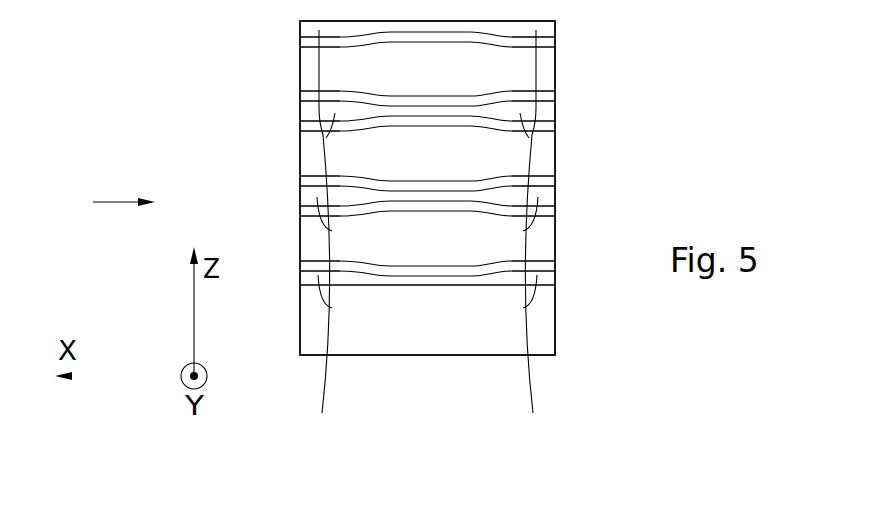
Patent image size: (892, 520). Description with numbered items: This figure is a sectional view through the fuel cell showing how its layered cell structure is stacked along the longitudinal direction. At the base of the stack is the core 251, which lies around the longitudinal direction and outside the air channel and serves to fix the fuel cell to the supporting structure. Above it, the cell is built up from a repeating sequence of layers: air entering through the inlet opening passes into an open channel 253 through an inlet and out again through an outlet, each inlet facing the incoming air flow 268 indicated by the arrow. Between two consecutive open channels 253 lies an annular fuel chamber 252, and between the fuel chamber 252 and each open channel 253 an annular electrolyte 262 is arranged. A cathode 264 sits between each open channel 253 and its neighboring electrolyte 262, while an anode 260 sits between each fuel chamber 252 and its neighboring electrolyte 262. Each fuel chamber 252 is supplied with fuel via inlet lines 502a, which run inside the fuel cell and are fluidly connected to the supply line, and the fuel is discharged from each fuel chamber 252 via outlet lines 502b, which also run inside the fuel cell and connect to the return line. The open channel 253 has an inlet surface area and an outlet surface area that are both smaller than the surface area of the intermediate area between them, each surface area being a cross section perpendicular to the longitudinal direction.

The core 251 is at (447, 327).
The fuel chamber 252 is at (312, 111).
The open channel 253 is at (315, 62).
The anode 260 is at (557, 100).
The electrolyte 262 is at (312, 92).
The cathode 264 is at (557, 92).
The air flow 268 is at (104, 184).
The inlet lines 502a is at (322, 393).
The outlet lines 502b is at (533, 393).